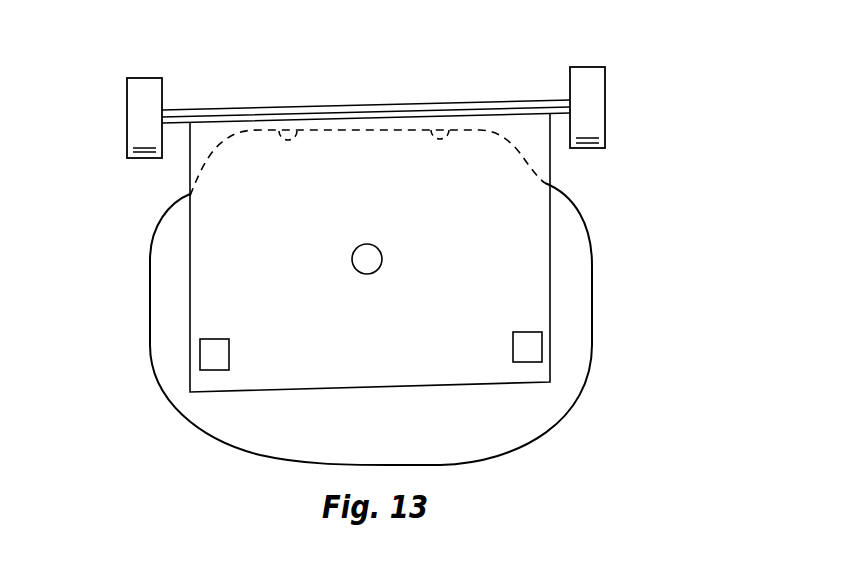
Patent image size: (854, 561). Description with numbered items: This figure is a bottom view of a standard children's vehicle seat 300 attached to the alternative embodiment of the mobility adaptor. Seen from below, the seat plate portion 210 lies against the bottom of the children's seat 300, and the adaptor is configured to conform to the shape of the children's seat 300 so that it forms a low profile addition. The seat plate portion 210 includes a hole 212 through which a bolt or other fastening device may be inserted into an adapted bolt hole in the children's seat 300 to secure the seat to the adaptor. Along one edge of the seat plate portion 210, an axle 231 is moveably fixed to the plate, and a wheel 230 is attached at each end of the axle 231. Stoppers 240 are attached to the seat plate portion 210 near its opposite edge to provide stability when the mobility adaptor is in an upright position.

The seat plate portion 210 is at (525, 268).
The hole 212 is at (382, 248).
The wheel 230 is at (592, 95).
The axle 231 is at (465, 107).
The stopper 240 is at (212, 359).
The children's vehicle seat 300 is at (577, 330).